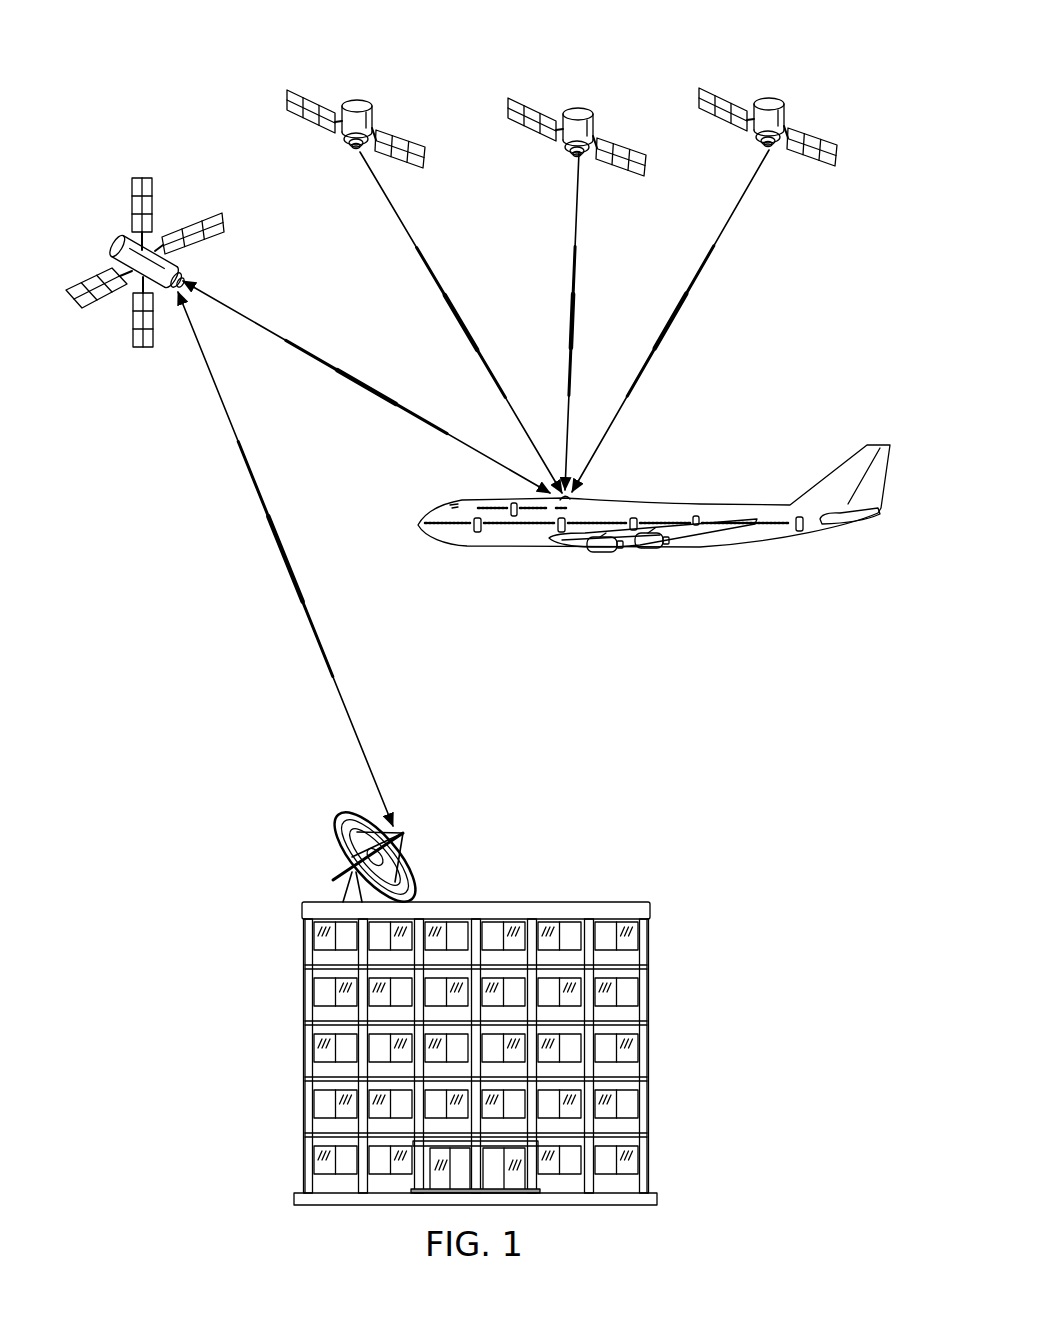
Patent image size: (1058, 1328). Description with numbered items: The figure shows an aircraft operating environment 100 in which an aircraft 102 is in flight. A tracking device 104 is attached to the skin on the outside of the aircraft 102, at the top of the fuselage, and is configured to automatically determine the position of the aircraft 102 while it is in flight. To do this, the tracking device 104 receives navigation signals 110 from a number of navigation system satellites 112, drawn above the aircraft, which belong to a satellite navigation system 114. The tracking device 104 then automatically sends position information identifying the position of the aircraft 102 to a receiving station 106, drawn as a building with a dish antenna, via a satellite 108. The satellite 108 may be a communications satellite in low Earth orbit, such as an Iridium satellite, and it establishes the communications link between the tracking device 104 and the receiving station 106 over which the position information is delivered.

The aircraft operating environment 100 is at (190, 86).
The aircraft 102 is at (517, 548).
The tracking device 104 is at (572, 496).
The receiving station 106 is at (575, 902).
The satellite 108 is at (116, 242).
The navigation signals 110 is at (450, 308).
The navigation system satellites 112 is at (358, 101).
The satellite navigation system 114 is at (680, 56).